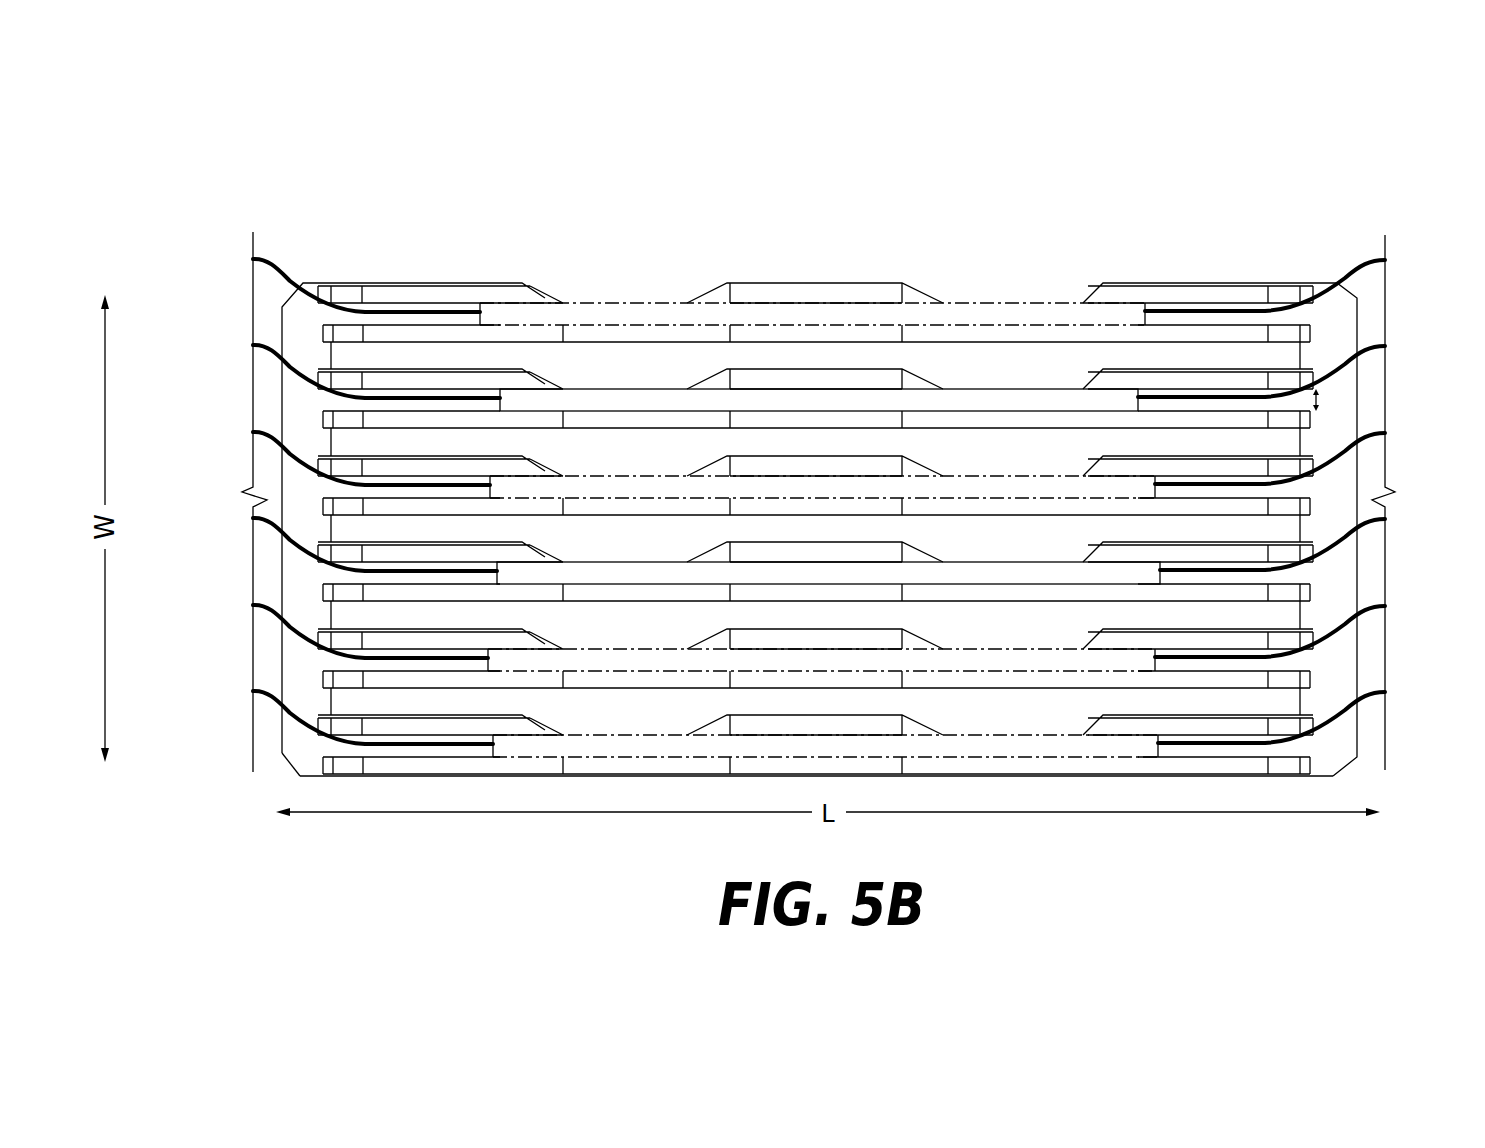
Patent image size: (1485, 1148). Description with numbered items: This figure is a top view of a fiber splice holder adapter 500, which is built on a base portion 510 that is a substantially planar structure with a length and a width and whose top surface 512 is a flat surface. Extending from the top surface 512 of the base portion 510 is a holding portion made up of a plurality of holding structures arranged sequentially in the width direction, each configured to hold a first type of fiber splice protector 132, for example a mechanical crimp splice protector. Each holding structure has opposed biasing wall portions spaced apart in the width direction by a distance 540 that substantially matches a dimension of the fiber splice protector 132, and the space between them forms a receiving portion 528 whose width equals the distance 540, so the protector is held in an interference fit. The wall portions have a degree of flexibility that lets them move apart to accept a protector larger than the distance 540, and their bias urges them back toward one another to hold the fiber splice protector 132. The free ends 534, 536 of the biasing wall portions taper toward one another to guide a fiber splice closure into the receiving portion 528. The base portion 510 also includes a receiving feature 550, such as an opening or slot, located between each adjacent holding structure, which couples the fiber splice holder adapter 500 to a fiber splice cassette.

The fiber splice holder adapter 500 is at (1278, 142).
The base portion 510 is at (1357, 478).
The top surface 512 is at (1340, 732).
The receiving portion 528 is at (304, 320).
The free end 534 is at (853, 291).
The free end 536 is at (880, 337).
The distance 540 is at (1322, 403).
The receiving feature 550 is at (1340, 763).
The fiber splice protector 132 is at (1335, 764).